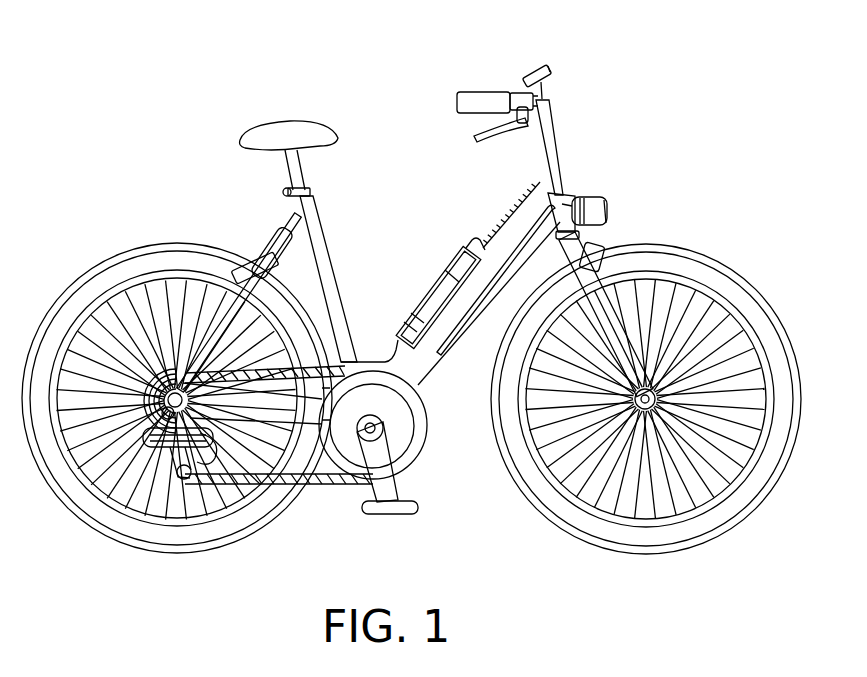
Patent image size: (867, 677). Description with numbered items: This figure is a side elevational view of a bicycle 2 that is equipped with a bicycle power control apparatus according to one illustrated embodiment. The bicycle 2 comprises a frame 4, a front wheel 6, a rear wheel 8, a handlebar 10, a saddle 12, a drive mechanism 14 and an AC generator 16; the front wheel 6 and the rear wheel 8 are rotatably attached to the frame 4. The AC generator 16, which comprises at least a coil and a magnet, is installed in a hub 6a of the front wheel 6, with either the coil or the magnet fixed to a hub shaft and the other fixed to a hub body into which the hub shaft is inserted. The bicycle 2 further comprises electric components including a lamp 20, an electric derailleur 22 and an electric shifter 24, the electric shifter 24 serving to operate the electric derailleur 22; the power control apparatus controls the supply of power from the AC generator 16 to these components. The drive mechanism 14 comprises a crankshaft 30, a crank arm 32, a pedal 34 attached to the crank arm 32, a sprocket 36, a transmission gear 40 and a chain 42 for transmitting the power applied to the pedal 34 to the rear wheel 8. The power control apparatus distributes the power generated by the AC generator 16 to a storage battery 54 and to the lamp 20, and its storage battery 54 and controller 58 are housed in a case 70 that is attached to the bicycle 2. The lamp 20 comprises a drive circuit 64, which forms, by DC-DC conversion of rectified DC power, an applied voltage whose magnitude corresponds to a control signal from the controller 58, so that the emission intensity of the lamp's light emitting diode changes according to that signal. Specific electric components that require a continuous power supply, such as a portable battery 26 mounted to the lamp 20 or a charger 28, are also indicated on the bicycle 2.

The bicycle 2 is at (706, 86).
The frame 4 is at (318, 222).
The front wheel 6 is at (680, 243).
The hub 6a is at (728, 352).
The rear wheel 8 is at (185, 243).
The handlebar 10 is at (467, 92).
The saddle 12 is at (290, 120).
The drive mechanism 14 is at (337, 500).
The AC generator 16 is at (648, 415).
The lamp 20 is at (607, 203).
The electric derailleur 22 is at (168, 455).
The electric shifter 24 is at (511, 92).
The portable battery 26 is at (542, 63).
The charger 28 is at (555, 67).
The crankshaft 30 is at (378, 426).
The crank arm 32 is at (398, 485).
The pedal 34 is at (405, 518).
The sprocket 36 is at (428, 437).
The transmission gear 40 is at (147, 437).
The chain 42 is at (317, 485).
The storage battery 54 is at (437, 265).
The controller 58 is at (403, 307).
The drive circuit 64 is at (581, 196).
The case 70 is at (447, 250).